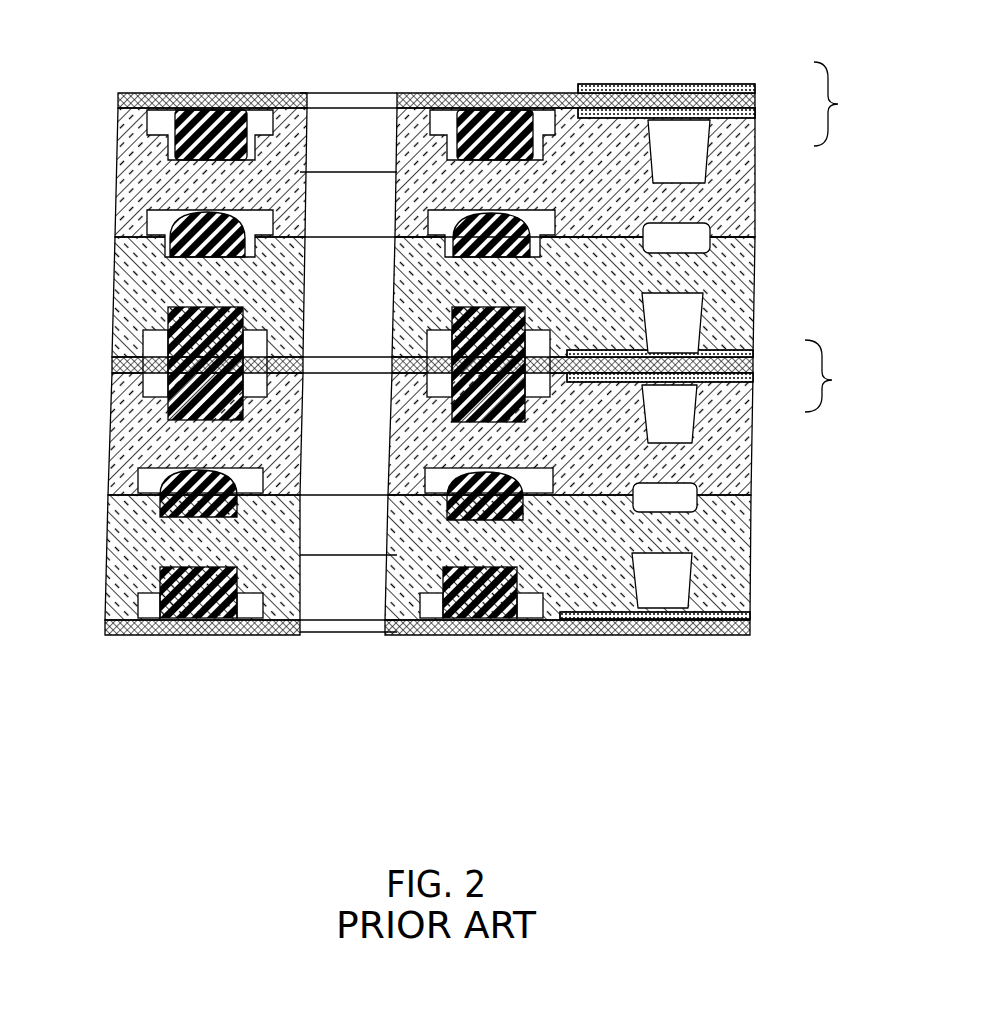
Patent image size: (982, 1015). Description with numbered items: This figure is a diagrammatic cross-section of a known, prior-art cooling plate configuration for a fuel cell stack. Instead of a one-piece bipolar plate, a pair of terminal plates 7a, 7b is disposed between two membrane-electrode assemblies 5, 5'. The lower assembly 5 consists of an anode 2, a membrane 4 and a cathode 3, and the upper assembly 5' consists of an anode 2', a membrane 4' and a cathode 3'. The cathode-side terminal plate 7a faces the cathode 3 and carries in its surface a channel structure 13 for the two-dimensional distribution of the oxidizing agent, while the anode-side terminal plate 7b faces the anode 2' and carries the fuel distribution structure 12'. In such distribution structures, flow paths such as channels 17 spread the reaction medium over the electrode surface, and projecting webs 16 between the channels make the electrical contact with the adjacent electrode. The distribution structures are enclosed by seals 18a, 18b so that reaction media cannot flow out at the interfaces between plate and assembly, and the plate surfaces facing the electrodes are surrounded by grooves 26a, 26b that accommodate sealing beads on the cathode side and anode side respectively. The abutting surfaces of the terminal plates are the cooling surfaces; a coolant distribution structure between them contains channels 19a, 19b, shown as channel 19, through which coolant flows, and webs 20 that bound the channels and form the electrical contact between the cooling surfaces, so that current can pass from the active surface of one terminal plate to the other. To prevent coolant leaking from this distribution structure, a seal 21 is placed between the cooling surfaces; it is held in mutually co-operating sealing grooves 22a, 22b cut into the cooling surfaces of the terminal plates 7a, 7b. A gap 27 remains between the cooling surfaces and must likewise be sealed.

The groove 26b is at (548, 133).
The cathode 3' is at (692, 74).
The membrane 4' is at (462, 103).
The anode 2' is at (692, 127).
The membrane-electrode assembly 5' is at (840, 104).
The reaction media distribution structure 12' is at (679, 151).
The anode-side terminal plate 7b is at (746, 183).
The channel 19 is at (691, 251).
The webs 20 is at (753, 236).
The gap 27 is at (117, 236).
The seal 18b is at (401, 128).
The sealing groove 22b is at (405, 214).
The seal 21 is at (455, 240).
The sealing groove 22a is at (425, 262).
The distribution structure 13 is at (690, 338).
The cathode-side terminal plate 7a is at (748, 318).
The cathode 3 is at (682, 348).
The membrane 4 is at (594, 372).
The membrane-electrode assembly 5 is at (831, 376).
The anode 2 is at (682, 393).
The seal 18a is at (438, 353).
The groove 26a is at (398, 377).
The channel 19b is at (746, 465).
The channel 19a is at (745, 512).
The channels 17 is at (670, 583).
The webs 16 is at (752, 614).